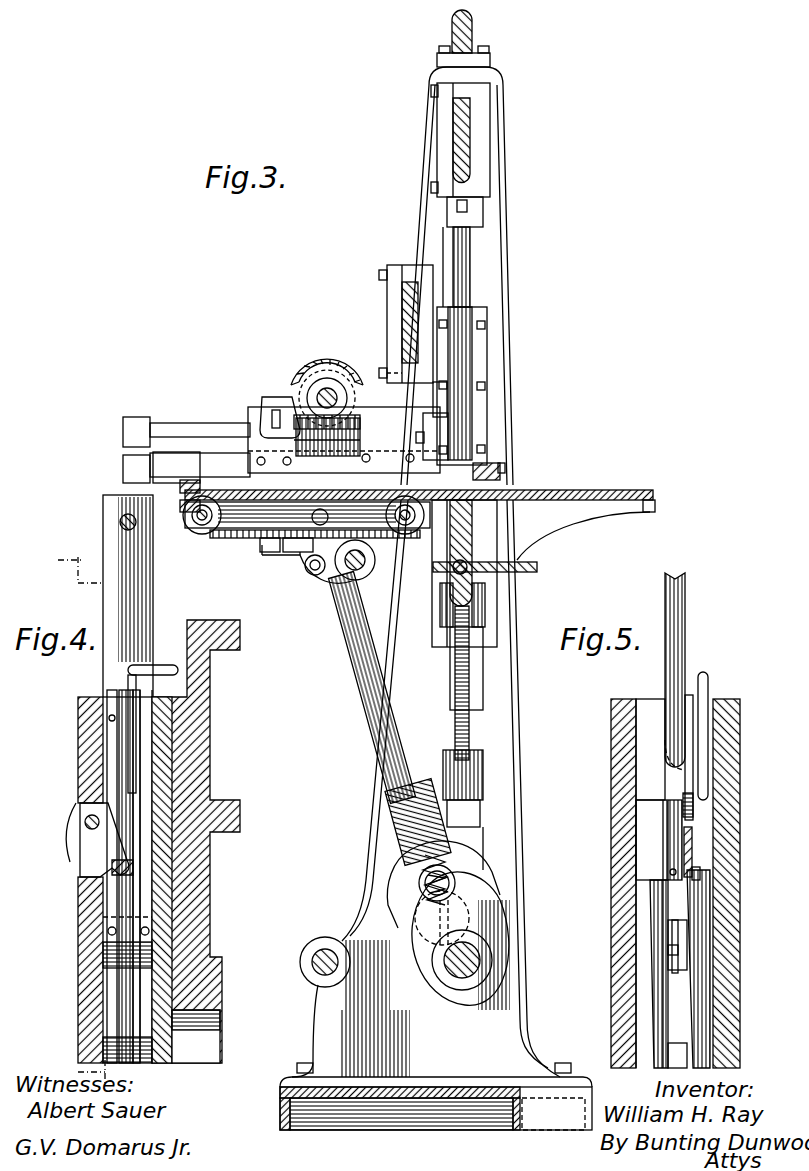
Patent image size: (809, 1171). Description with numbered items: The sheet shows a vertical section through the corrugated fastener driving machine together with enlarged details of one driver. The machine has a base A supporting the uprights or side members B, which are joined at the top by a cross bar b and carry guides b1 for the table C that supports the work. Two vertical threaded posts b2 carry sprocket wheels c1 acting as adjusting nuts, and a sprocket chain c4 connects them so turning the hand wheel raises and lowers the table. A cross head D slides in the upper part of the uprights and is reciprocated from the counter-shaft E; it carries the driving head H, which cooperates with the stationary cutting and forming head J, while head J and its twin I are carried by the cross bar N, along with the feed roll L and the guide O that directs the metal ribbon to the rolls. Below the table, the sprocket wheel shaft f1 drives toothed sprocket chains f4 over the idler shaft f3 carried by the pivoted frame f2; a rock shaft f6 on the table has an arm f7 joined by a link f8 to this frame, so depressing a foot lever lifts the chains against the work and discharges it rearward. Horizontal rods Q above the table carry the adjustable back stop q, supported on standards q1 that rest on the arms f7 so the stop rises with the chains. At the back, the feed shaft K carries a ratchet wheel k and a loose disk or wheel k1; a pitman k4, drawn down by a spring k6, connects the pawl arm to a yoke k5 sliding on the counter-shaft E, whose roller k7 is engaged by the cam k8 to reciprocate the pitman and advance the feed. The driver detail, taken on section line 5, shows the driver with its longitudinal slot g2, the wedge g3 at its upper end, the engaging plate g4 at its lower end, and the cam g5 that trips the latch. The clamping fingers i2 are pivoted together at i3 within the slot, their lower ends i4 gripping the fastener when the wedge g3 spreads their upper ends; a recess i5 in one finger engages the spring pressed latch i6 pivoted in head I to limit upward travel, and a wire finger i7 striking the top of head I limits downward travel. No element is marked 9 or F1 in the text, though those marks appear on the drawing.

In FIG. 3, the uprights or side members B is at (503, 398).
In FIG. 3, the cross bar b is at (472, 31).
In FIG. 3, the driving head H is at (478, 158).
In FIG. 3, the cross head D is at (468, 123).
In FIG. 3, the feed rod / bar 9 is at (468, 268).
In FIG. 4, the feed rod / bar 9 is at (110, 607).
In FIG. 5, the feed rod / bar 9 is at (683, 650).
In FIG. 3, the cross bar N is at (403, 312).
In FIG. 3, the cutting and forming head J is at (470, 368).
In FIG. 3, the rods Q is at (220, 462).
In FIG. 3, the back stop or abutment q is at (190, 480).
In FIG. 3, the guide O is at (265, 420).
In FIG. 3, the feed shaft K is at (329, 392).
In FIG. 3, the rotatable disk or wheel k1 is at (310, 368).
In FIG. 3, the ratchet wheel k is at (307, 364).
In FIG. 3, the feed roll L is at (358, 442).
In FIG. 3, the table C is at (590, 495).
In FIG. 3, the frame f2 is at (242, 520).
In FIG. 3, the sprocket wheel shaft f1 is at (200, 525).
In FIG. 3, the link f8 is at (328, 520).
In FIG. 3, the sprocket chains f4 is at (253, 541).
In FIG. 3, the standards q1 is at (270, 548).
In FIG. 3, the arm f7 is at (285, 552).
In FIG. 3, the rock shaft f6 is at (329, 545).
In FIG. 3, the shaft f3 is at (386, 548).
In FIG. 3, the pitman k4 is at (367, 683).
In FIG. 3, the spring k6 is at (443, 857).
In FIG. 3, the yoke k5 is at (407, 910).
In FIG. 3, the roller or projection k7 is at (453, 887).
In FIG. 3, the cam k8 is at (428, 935).
In FIG. 3, the counter-shaft E is at (456, 970).
In FIG. 3, the boss F1 is at (317, 972).
In FIG. 3, the base A is at (463, 1097).
In FIG. 3, the sprocket chain c4 is at (538, 568).
In FIG. 3, the sprocket wheels c1 is at (470, 573).
In FIG. 3, the vertical screws or threaded posts b2 is at (462, 640).
In FIG. 3, the guides b1 is at (478, 690).
In FIG. 4, the section line 5- 5 is at (89, 813).
In FIG. 4, the cutting and forming head I is at (240, 824).
In FIG. 5, the cutting and forming head I is at (737, 710).
In FIG. 4, the cam or wedge g5 is at (115, 743).
In FIG. 5, the cam or wedge g5 is at (687, 703).
In FIG. 4, the clamping fingers i2 is at (130, 1003).
In FIG. 5, the clamping fingers i2 is at (693, 898).
In FIG. 4, the longitudinal slot g2 is at (135, 782).
In FIG. 4, the cam portion or wedge g3 is at (135, 747).
In FIG. 5, the cam portion or wedge g3 is at (680, 760).
In FIG. 4, the wire finger i7 is at (127, 677).
In FIG. 5, the wire finger i7 is at (708, 677).
In FIG. 4, the spring pressed latch i6 is at (92, 838).
In FIG. 5, the spring pressed latch i6 is at (697, 837).
In FIG. 4, the opening or recess i5 is at (125, 870).
In FIG. 5, the opening or recess i5 is at (697, 867).
In FIG. 4, the thin plate or engaging portion g4 is at (147, 955).
In FIG. 5, the thin plate or engaging portion g4 is at (667, 955).
In FIG. 4, the lower ends of the fingers i4 is at (143, 1050).
In FIG. 5, the lower ends of the fingers i4 is at (683, 1060).
In FIG. 5, the pivotal connection i3 is at (640, 840).